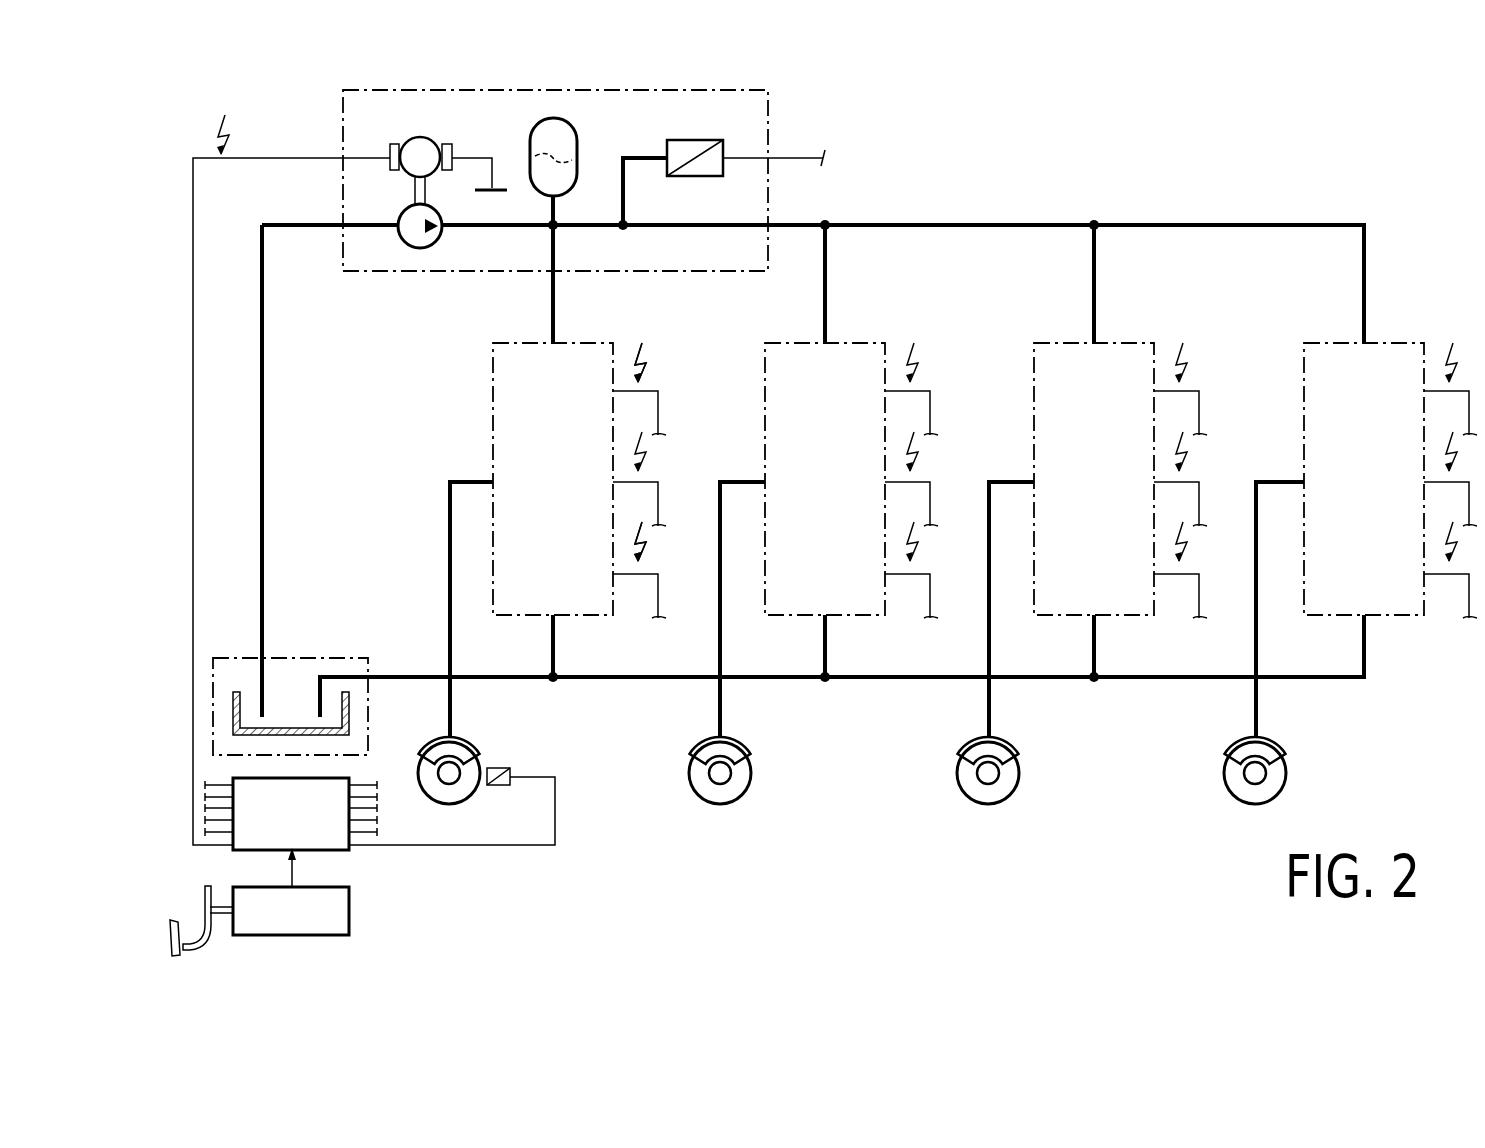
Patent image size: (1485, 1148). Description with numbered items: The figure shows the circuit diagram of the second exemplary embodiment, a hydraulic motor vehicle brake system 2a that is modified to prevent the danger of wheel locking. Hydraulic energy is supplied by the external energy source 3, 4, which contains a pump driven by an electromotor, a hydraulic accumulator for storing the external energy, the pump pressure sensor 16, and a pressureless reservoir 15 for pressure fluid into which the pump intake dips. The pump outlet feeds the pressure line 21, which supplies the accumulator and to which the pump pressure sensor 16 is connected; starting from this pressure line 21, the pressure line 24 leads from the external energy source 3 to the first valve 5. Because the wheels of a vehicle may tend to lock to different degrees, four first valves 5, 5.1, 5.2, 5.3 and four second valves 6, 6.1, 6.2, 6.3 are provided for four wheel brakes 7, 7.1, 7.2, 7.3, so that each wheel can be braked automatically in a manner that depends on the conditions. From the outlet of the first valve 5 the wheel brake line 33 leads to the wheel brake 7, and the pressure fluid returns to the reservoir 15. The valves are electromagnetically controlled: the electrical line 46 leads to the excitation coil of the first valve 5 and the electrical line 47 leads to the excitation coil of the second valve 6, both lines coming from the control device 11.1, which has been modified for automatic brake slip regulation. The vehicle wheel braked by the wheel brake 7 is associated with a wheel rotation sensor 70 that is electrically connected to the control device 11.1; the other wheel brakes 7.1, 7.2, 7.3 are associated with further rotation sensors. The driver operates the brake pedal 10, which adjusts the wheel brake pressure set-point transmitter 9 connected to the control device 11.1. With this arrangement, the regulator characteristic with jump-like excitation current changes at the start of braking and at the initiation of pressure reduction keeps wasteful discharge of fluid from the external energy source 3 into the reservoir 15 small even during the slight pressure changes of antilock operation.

The hydraulic motor vehicle brake system 2a is at (1078, 815).
The external energy source 3 is at (770, 100).
The pressure line 21 is at (507, 230).
The pump pressure sensor 16 is at (697, 138).
The pressure line 24 is at (552, 310).
The first valve 5 is at (606, 335).
The first valve 5.1 is at (880, 335).
The first valve 5.2 is at (1145, 335).
The first valve 5.3 is at (1417, 335).
The second valve 6 is at (598, 620).
The second valve 6.1 is at (868, 620).
The second valve 6.2 is at (1135, 620).
The second valve 6.3 is at (1404, 620).
The wheel brake line 33 is at (465, 480).
The electrical line 46 is at (660, 402).
The electrical line 47 is at (660, 588).
The wheel brake 7 is at (463, 748).
The wheel brake 7.1 is at (730, 747).
The wheel brake 7.2 is at (997, 747).
The wheel brake 7.3 is at (1264, 747).
The wheel rotation sensor 70 is at (498, 767).
The external energy source 4 is at (358, 655).
The pressureless reservoir 15 is at (349, 713).
The control device 11.1 is at (323, 842).
The wheel brake pressure set-point transmitter 9 is at (337, 922).
The brake pedal 10 is at (168, 930).